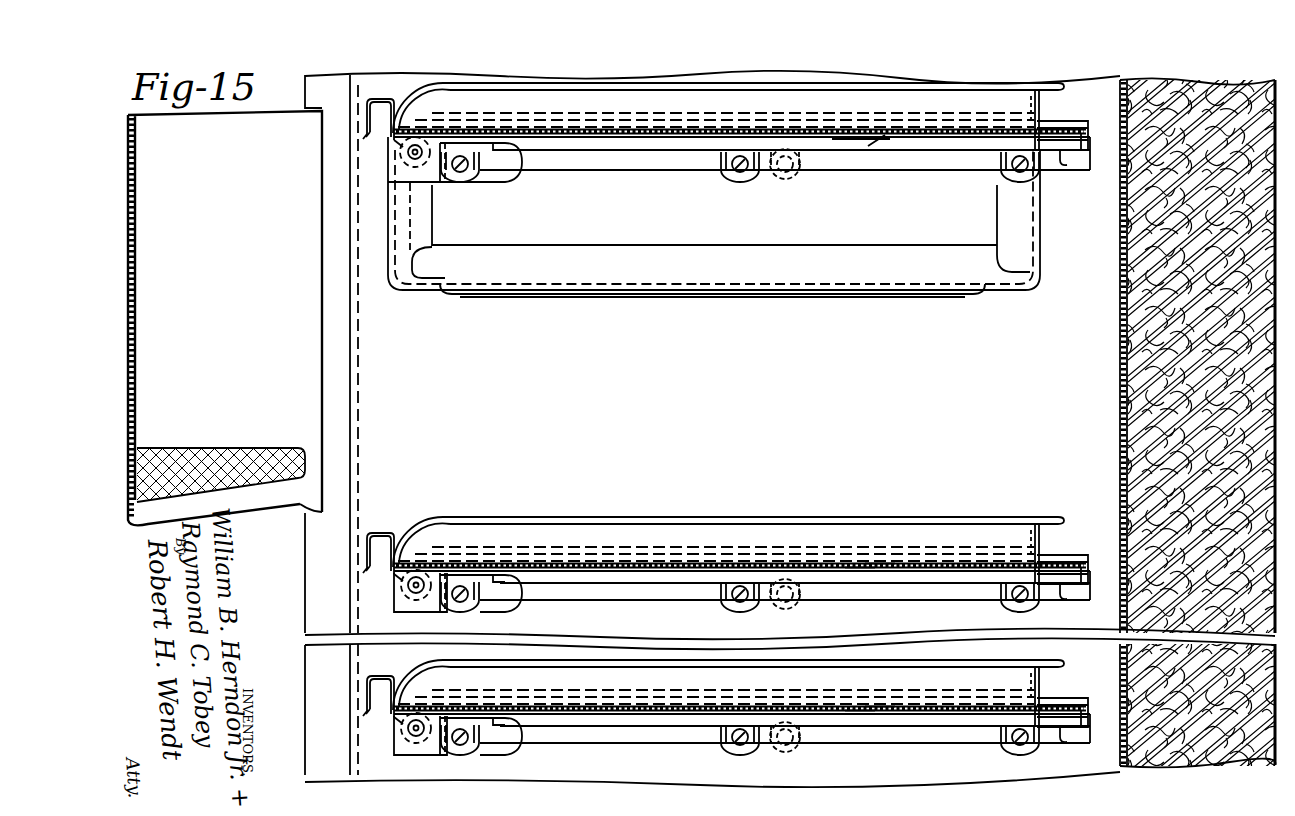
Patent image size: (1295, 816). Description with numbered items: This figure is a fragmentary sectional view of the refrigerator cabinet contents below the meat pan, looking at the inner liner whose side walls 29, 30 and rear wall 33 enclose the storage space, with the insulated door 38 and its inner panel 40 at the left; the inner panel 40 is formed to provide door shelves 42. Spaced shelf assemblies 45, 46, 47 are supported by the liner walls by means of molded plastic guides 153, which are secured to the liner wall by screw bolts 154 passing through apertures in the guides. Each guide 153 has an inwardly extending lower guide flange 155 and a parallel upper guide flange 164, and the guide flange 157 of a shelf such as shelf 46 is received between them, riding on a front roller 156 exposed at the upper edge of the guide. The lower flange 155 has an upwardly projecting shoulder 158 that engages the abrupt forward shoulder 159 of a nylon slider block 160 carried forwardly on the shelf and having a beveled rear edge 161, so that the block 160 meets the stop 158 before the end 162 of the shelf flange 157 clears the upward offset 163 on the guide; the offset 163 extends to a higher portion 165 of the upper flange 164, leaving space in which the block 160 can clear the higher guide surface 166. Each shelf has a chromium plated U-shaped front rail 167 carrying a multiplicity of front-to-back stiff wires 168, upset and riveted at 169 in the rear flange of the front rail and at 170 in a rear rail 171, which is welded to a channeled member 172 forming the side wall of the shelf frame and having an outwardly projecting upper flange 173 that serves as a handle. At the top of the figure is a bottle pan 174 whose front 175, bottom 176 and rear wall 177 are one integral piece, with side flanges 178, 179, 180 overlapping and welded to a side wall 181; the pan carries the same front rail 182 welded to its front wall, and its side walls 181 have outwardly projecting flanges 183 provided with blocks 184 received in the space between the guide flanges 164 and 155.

The side wall 29 is at (310, 570).
The side wall 30 is at (1093, 390).
The rear wall 33 is at (1120, 311).
The insulated door 38 is at (285, 503).
The inner panel 40 is at (155, 133).
The shelves 42 is at (248, 447).
The shelf assembly 45 is at (628, 127).
The shelf assembly 46 is at (740, 528).
The shelf assembly 47 is at (740, 735).
The molded plastic guide 153 is at (550, 165).
The screw bolts 154 is at (463, 172).
The guide flange 155 is at (760, 148).
The front roller 156 is at (408, 185).
The guide flange 157 is at (655, 138).
The upwardly projecting shoulder 158 is at (503, 454).
The abrupt forward shoulder 159 is at (843, 667).
The nylon slider block 160 is at (877, 665).
The beveled rear edge 161 is at (903, 660).
The end 162 is at (1086, 132).
The upward offset 163 is at (665, 120).
The upper guide flange 164 is at (1088, 94).
The higher portion 165 is at (512, 113).
The higher guide surface 166 is at (478, 546).
The front rail 167 is at (395, 103).
The front-to-back stiff wires 168 is at (410, 120).
The rivet point 169 is at (393, 135).
The rivet point 170 is at (1031, 113).
The rear rail 171 is at (1042, 90).
The channeled member 172 is at (963, 94).
The upper flange 173 is at (815, 82).
The bottle pan 174 is at (838, 260).
The front 175 is at (388, 230).
The bottom 176 is at (747, 292).
The rear wall 177 is at (1040, 221).
The side flange 178 is at (412, 226).
The side flange 179 is at (650, 252).
The side flange 180 is at (997, 223).
The side wall 181 is at (700, 245).
The front rail 182 is at (365, 125).
The outwardly projecting flange 183 is at (925, 137).
The blocks 184 is at (852, 142).